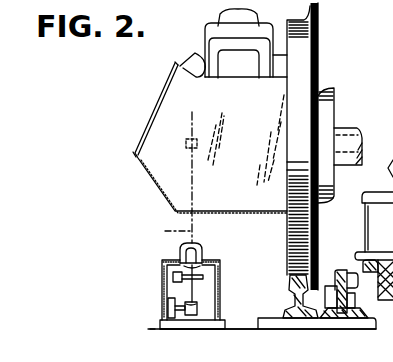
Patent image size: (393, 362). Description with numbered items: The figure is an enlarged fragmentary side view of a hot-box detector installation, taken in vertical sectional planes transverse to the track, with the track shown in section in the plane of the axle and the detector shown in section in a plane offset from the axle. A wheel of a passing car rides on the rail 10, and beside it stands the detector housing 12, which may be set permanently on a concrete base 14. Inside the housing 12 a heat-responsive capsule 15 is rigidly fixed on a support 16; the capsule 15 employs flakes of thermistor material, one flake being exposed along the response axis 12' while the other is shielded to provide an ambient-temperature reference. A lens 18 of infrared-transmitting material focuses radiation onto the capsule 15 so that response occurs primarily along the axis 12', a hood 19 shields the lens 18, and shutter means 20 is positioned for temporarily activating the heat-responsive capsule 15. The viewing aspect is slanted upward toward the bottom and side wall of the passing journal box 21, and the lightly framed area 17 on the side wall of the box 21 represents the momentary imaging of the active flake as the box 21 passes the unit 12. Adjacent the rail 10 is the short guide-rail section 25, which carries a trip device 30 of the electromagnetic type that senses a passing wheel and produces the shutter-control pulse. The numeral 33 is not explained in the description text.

The rail 10 is at (288, 296).
The detector housing 12 is at (169, 294).
The response axis 12' is at (169, 235).
The concrete base 14 is at (220, 328).
The heat-responsive capsule 15 is at (198, 306).
The support 16 is at (177, 312).
The lightly framed area 17 is at (196, 176).
The lens 18 is at (180, 254).
The hood 19 is at (198, 251).
The shutter means 20 is at (203, 276).
The journal box 21 is at (157, 184).
The guide-rail section 25 is at (343, 272).
The trip device 30 is at (199, 357).
The member 33 is at (138, 357).